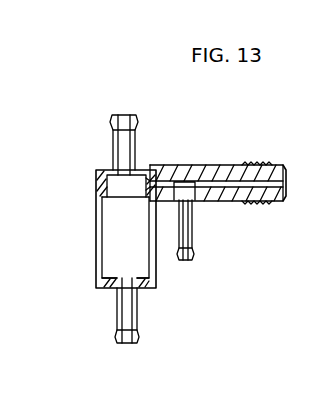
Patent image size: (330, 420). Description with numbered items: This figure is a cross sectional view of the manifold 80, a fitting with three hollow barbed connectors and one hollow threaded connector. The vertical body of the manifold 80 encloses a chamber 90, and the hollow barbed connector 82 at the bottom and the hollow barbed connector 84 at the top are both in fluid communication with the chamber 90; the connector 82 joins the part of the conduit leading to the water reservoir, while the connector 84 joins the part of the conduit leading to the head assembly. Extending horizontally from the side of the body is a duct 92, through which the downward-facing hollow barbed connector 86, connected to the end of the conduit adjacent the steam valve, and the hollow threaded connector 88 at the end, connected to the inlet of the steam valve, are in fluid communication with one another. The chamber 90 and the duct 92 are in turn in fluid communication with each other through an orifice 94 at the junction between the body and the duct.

The manifold 80 is at (216, 321).
The hollow barbed connector 82 is at (118, 312).
The hollow barbed connector 84 is at (113, 147).
The hollow barbed connector 86 is at (195, 232).
The hollow threaded connector 88 is at (258, 163).
The chamber 90 is at (118, 235).
The duct 92 is at (212, 185).
The orifice 94 is at (147, 182).